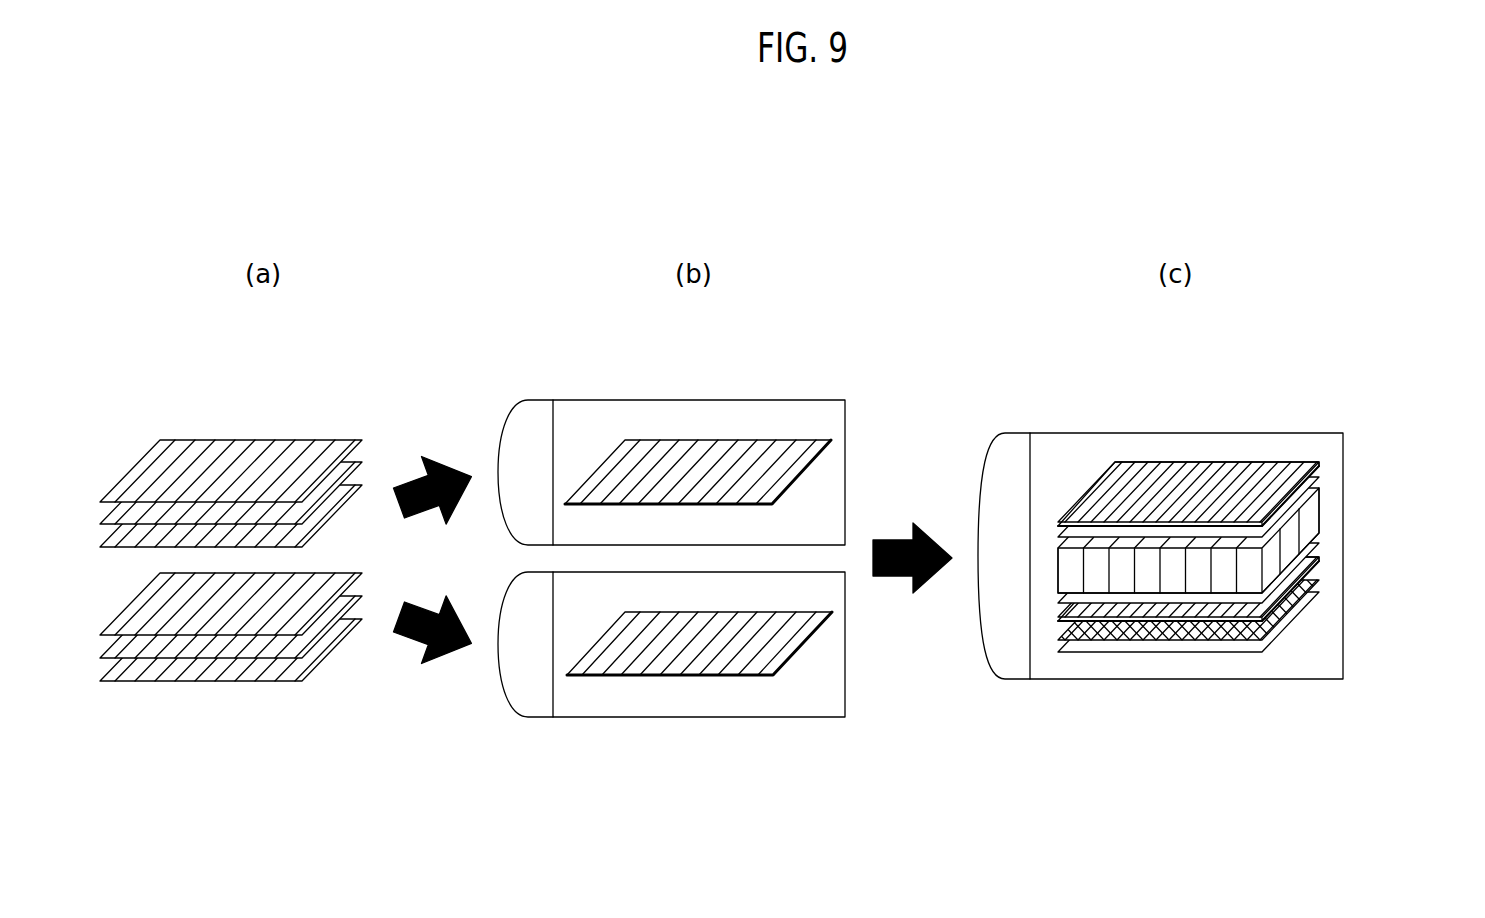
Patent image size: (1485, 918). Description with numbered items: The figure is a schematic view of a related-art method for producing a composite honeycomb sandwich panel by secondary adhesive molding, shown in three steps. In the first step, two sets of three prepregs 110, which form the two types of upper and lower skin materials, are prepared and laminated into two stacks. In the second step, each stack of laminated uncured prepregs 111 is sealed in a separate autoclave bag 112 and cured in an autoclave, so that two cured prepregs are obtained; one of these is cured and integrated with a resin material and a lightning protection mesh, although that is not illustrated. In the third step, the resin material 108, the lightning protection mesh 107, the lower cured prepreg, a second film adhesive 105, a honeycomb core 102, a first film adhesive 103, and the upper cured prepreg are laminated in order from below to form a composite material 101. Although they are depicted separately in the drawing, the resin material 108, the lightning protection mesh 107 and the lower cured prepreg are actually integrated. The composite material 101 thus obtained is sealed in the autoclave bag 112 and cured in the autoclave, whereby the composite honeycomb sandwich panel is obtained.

The composite material 101 is at (1240, 540).
The honeycomb core 102 is at (1318, 512).
The first film adhesive 103 is at (1317, 470).
The second film adhesive 105 is at (1320, 537).
The lightning protection mesh 107 is at (1317, 590).
The resin material 108 is at (1300, 612).
The prepregs 110 is at (178, 450).
The laminated uncured prepregs 111 is at (607, 465).
The autoclave bag 112 is at (795, 400).